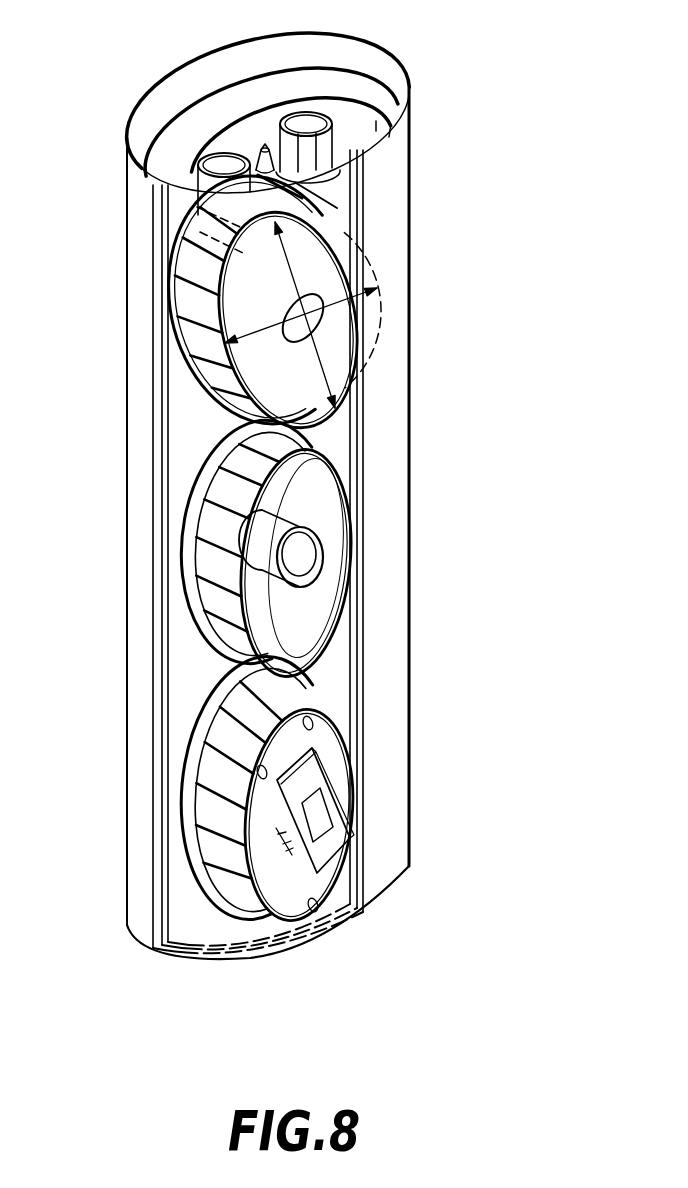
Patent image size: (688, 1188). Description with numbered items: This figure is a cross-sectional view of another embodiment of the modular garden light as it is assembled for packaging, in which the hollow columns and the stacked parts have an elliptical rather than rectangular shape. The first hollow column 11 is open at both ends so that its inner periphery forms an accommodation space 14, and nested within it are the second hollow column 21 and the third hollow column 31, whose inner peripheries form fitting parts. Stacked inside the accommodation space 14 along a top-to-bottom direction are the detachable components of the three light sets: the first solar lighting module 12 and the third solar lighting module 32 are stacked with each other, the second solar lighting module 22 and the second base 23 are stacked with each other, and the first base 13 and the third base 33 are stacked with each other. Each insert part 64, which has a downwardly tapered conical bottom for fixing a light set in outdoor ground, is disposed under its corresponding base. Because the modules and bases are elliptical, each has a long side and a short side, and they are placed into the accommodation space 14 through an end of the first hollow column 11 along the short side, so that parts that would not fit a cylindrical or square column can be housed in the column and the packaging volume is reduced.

The first hollow column 11 is at (343, 933).
The second hollow column 21 is at (282, 957).
The third hollow column 31 is at (187, 970).
The accommodation space 14 is at (377, 123).
The insert part 64 is at (302, 112).
The first base 13 is at (360, 418).
The third base 33 is at (176, 359).
The second solar lighting module 22 is at (168, 424).
The second base 23 is at (323, 610).
The third solar lighting module 32 is at (190, 644).
The first solar lighting module 12 is at (337, 780).